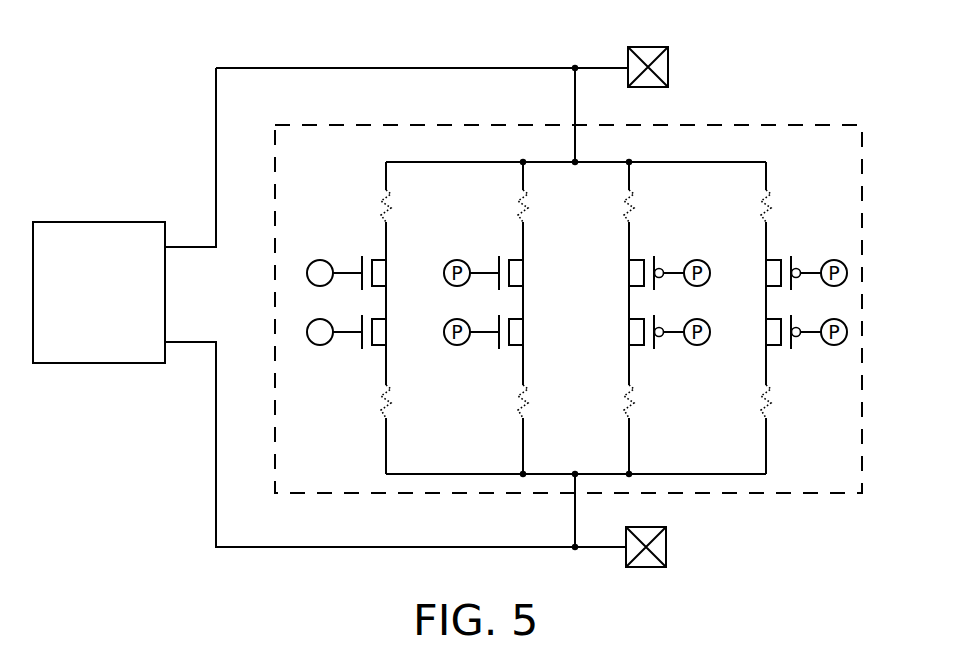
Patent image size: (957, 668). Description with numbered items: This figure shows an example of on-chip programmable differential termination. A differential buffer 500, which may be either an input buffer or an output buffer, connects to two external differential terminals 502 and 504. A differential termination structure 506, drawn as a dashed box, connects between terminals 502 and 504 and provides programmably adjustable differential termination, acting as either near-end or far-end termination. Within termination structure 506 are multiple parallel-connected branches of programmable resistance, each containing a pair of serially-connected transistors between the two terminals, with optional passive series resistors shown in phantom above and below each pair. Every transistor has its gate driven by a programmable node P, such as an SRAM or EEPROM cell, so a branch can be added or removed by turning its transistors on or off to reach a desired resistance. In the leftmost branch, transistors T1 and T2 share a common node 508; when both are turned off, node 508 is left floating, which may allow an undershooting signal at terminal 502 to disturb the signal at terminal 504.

The differential buffer 500 is at (80, 222).
The differential terminal 502 is at (668, 68).
The differential terminal 504 is at (666, 547).
The differential termination structure 506 is at (378, 125).
The common node 508 is at (389, 303).
The transistor T1 is at (391, 276).
The transistor T2 is at (381, 334).